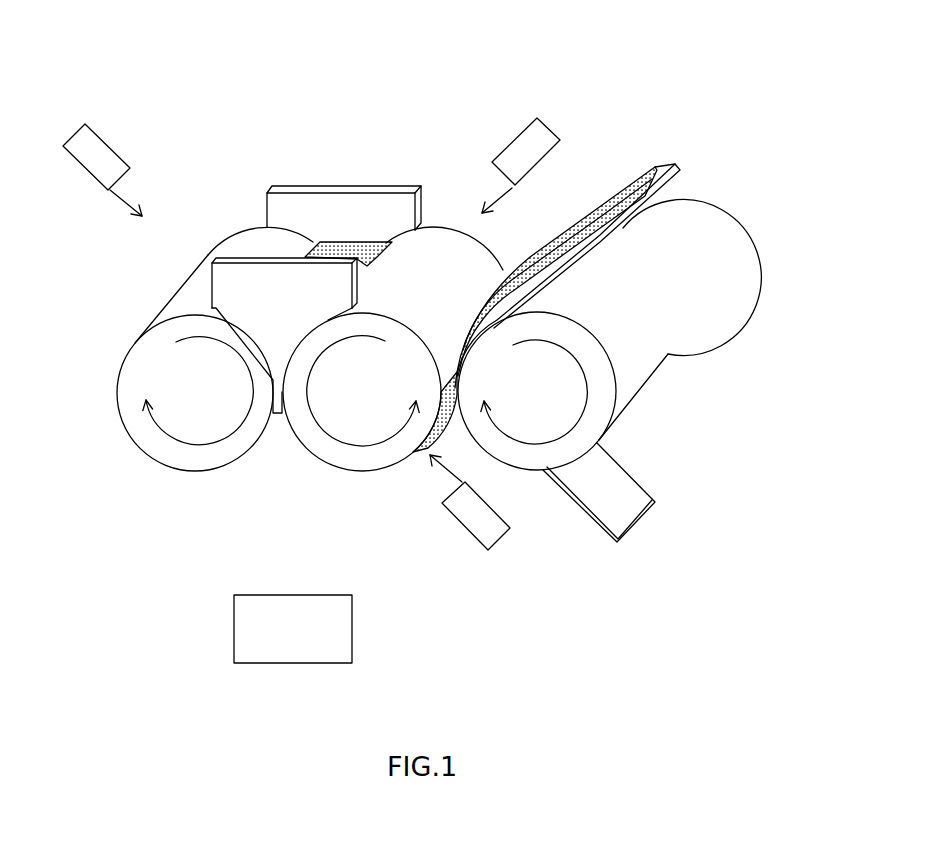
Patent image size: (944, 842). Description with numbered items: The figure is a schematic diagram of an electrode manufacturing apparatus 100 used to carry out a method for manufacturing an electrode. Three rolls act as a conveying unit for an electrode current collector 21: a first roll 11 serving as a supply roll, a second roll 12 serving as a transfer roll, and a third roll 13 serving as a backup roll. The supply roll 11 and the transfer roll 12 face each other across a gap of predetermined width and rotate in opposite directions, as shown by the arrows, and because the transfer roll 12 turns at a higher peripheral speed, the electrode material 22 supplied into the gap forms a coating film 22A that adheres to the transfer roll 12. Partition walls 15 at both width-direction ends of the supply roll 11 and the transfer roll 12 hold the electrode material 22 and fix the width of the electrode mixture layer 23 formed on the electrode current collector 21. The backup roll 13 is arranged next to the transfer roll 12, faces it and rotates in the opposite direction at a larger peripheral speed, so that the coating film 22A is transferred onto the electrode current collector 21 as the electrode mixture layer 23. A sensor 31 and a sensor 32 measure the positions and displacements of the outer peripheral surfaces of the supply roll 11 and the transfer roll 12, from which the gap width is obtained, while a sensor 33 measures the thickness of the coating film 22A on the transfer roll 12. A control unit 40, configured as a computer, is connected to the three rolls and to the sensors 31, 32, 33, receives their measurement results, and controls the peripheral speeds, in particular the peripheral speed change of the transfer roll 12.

The electrode manufacturing apparatus 100 is at (702, 74).
The first roll 11 is at (193, 462).
The second roll 12 is at (362, 462).
The third roll 13 is at (683, 283).
The partition wall 15 is at (213, 260).
The electrode current collector 21 is at (660, 200).
The electrode material 22 is at (337, 241).
The coating film 22A is at (448, 437).
The electrode mixture layer 23 is at (608, 190).
The sensor 31 is at (85, 172).
The sensor 32 is at (522, 132).
The sensor 33 is at (463, 537).
The control unit 40 is at (352, 640).